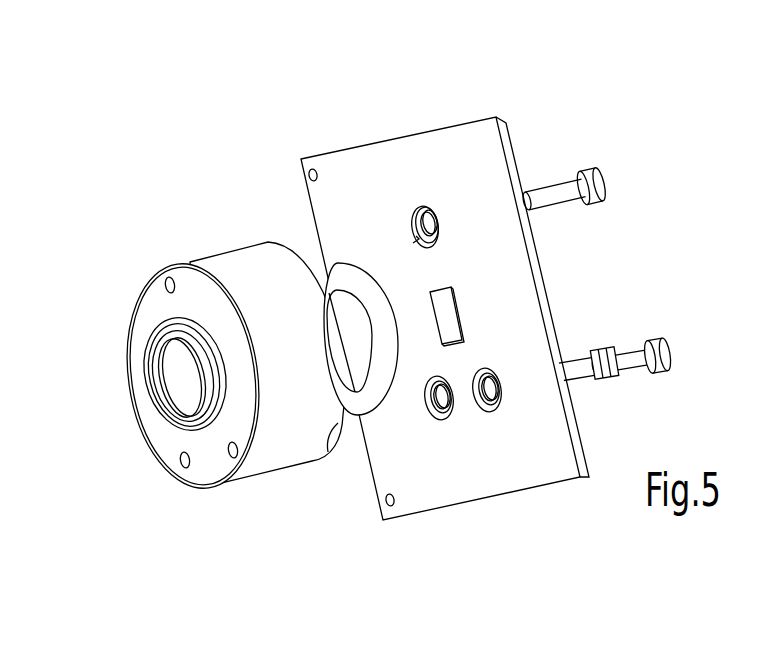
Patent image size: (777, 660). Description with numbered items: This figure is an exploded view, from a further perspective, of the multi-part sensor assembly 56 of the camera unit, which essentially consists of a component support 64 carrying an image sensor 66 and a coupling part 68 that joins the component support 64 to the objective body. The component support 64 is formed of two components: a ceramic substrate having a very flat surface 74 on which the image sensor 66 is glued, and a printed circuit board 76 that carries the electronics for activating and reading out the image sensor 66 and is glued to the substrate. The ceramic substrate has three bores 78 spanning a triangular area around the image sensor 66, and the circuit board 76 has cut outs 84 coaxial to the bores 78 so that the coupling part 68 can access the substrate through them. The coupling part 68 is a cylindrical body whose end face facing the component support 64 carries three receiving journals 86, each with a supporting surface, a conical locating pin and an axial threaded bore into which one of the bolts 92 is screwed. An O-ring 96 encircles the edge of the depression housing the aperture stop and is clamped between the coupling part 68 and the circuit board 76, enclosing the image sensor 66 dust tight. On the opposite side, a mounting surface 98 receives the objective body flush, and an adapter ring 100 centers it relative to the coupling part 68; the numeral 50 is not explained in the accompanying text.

The sensor device 50 is at (176, 5).
The sensor assembly 56 is at (345, 73).
The component support 64 is at (534, 516).
The image sensor 66 is at (442, 323).
The coupling part 68 is at (272, 450).
The flat surface 74 is at (417, 242).
The printed circuit board 76 is at (467, 473).
The bores 78 is at (435, 217).
The cut outs 84 is at (415, 220).
The receiving journals 86 is at (337, 420).
The bolts 92 is at (575, 360).
The O-ring 96 is at (324, 281).
The mounting surface 98 is at (183, 298).
The adapter ring 100 is at (163, 392).